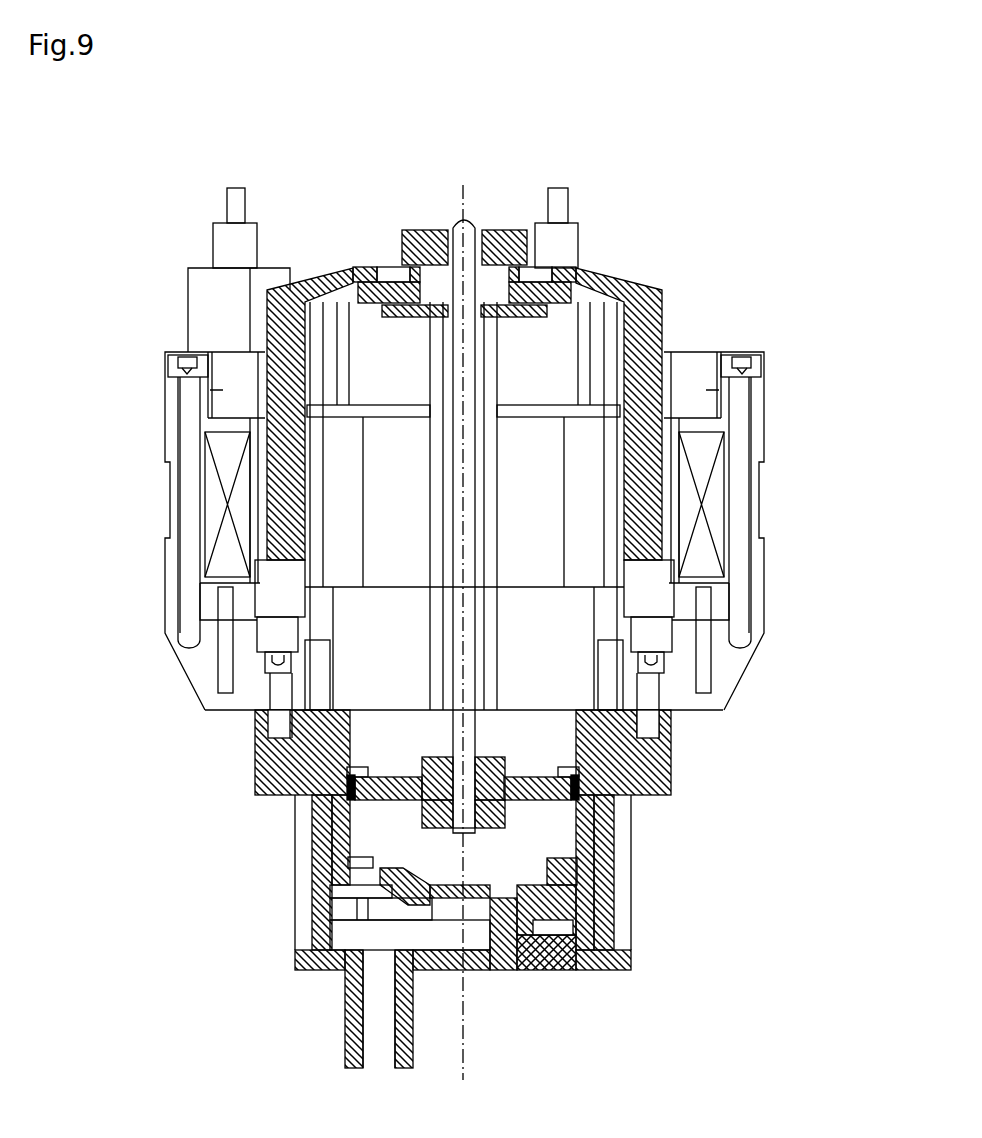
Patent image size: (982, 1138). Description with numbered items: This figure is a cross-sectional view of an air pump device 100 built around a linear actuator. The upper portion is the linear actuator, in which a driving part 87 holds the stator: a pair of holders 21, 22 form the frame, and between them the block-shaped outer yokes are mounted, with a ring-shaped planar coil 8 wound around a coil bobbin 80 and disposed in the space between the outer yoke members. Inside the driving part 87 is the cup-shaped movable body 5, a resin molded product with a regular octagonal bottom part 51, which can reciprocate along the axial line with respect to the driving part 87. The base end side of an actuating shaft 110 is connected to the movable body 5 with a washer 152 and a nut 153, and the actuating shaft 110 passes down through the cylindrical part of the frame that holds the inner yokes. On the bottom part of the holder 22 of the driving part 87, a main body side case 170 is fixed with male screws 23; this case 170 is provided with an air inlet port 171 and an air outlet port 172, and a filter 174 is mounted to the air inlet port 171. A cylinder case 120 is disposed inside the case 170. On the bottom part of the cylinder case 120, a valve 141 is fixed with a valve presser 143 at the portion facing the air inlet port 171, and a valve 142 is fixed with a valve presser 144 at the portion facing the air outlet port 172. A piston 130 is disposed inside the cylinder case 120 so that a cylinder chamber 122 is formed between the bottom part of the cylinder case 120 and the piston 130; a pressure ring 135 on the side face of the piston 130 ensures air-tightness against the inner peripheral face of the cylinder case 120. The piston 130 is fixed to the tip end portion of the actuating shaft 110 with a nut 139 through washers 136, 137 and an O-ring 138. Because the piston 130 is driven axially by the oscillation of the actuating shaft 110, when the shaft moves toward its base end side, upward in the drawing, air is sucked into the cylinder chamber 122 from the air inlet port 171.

The air pump device 100 is at (792, 322).
The movable body 5 is at (670, 288).
The bottom part 51 is at (565, 285).
The nut 153 is at (412, 230).
The actuating shaft 110 is at (467, 372).
The washer 152 is at (353, 268).
The driving part 87 is at (162, 506).
The holder 21 is at (728, 380).
The coil bobbin 80 is at (220, 423).
The coil 8 is at (713, 503).
The holder 22 is at (683, 638).
The male screws 23 is at (650, 697).
The O-ring 138 is at (640, 765).
The pressure ring 135 is at (300, 795).
The washer 136 is at (340, 840).
The nut 139 is at (612, 828).
The washer 137 is at (348, 782).
The piston 130 is at (400, 800).
The cylinder case 120 is at (400, 872).
The valve 142 is at (362, 905).
The valve presser 144 is at (340, 918).
The cylinder chamber 122 is at (465, 890).
The valve 141 is at (565, 897).
The valve presser 143 is at (562, 870).
The filter 174 is at (578, 952).
The air inlet port 171 is at (545, 962).
The main body side case 170 is at (302, 965).
The air outlet port 172 is at (352, 1015).